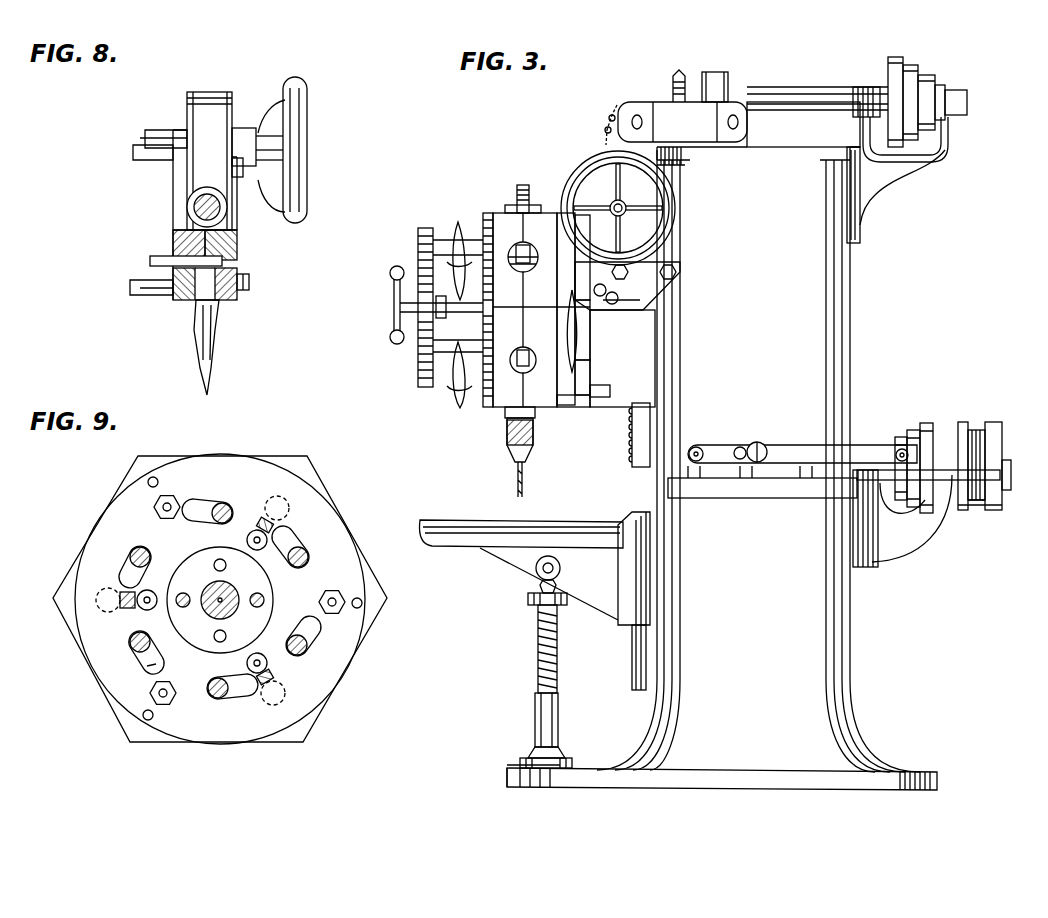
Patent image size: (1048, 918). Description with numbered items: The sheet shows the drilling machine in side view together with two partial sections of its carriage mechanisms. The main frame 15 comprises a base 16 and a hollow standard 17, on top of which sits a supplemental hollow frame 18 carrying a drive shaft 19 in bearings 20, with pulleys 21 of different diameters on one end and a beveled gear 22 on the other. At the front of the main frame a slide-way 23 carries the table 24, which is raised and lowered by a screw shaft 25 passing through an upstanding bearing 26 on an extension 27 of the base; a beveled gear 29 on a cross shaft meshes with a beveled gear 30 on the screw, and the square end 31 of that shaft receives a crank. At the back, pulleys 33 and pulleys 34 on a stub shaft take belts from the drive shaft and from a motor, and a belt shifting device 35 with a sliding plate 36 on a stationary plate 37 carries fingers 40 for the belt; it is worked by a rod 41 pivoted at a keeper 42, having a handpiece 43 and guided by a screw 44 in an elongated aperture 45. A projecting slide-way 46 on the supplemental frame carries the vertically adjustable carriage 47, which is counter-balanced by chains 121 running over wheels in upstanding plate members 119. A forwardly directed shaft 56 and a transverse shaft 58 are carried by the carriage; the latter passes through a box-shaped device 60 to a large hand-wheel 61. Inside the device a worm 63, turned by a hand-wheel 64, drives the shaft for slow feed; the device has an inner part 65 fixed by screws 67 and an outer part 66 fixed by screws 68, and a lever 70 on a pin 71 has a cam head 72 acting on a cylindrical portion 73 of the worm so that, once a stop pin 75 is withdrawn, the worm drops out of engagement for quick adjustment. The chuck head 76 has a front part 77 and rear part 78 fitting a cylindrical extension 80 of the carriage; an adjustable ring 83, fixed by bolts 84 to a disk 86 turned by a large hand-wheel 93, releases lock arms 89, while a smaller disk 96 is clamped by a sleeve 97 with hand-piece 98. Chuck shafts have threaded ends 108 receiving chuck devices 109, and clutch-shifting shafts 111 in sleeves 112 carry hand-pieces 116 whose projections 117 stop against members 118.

In FIG. 3, the main frame 15 is at (858, 568).
In FIG. 3, the base 16 is at (927, 771).
In FIG. 3, the hollow standard 17 is at (758, 686).
In FIG. 3, the supplemental hollow frame 18 is at (758, 413).
In FIG. 3, the drive shaft 19 is at (800, 87).
In FIG. 3, the bearings 20 is at (860, 110).
In FIG. 3, the pulleys 21 is at (922, 72).
In FIG. 3, the beveled gear 22 is at (679, 72).
In FIG. 3, the slide-way 23 is at (632, 652).
In FIG. 3, the table 24 is at (442, 522).
In FIG. 3, the screw shaft 25 is at (538, 655).
In FIG. 3, the upstanding bearing 26 is at (535, 712).
In FIG. 3, the extension 27 is at (507, 777).
In FIG. 3, the beveled gear 29 is at (540, 586).
In FIG. 3, the beveled gear 30 is at (530, 600).
In FIG. 3, the square end 31 is at (535, 567).
In FIG. 3, the pulleys 33 is at (900, 437).
In FIG. 3, the pulleys 34 is at (985, 426).
In FIG. 3, the belt shifting device 35 is at (945, 470).
In FIG. 3, the sliding plate 36 is at (985, 506).
In FIG. 3, the stationary plate 37 is at (948, 522).
In FIG. 3, the projecting fingers 40 is at (1006, 470).
In FIG. 3, the rod 41 is at (792, 471).
In FIG. 3, the keeper pivot 42 is at (897, 451).
In FIG. 3, the handpiece 43 is at (698, 446).
In FIG. 3, the screw 44 is at (761, 444).
In FIG. 3, the elongated aperture 45 is at (741, 447).
In FIG. 3, the projecting slide-way 46 is at (632, 440).
In FIG. 3, the carriage 47 is at (622, 358).
In FIG. 9, the forwardly directed shaft 56 is at (229, 611).
In FIG. 3, the shaft 58 is at (625, 213).
In FIG. 8, the box-shaped device 60 is at (210, 190).
In FIG. 3, the box-shaped device 60 is at (650, 195).
In FIG. 8, the large hand-wheel 61 is at (300, 103).
In FIG. 3, the large hand-wheel 61 is at (595, 160).
In FIG. 8, the worm 63 is at (221, 207).
In FIG. 3, the hand-wheel 64 is at (598, 284).
In FIG. 8, the inner part 65 is at (176, 218).
In FIG. 8, the outer part 66 is at (237, 230).
In FIG. 8, the screws 67 is at (162, 140).
In FIG. 3, the screws 68 is at (668, 276).
In FIG. 8, the lever 70 is at (196, 306).
In FIG. 3, the lever 70 is at (578, 352).
In FIG. 8, the pin 71 is at (150, 261).
In FIG. 8, the cam head 72 is at (173, 237).
In FIG. 8, the cylindrical portion 73 is at (190, 198).
In FIG. 8, the stop pin 75 is at (250, 286).
In FIG. 3, the stop pin 75 is at (604, 301).
In FIG. 9, the chuck head 76 is at (133, 470).
In FIG. 3, the chuck head 76 is at (550, 218).
In FIG. 3, the front part 77 is at (492, 402).
In FIG. 3, the rear part 78 is at (561, 407).
In FIG. 3, the cylindrical extension 80 is at (592, 391).
In FIG. 3, the adjustable ring 83 is at (580, 390).
In FIG. 9, the bolts 84 is at (152, 692).
In FIG. 9, the disk 86 is at (312, 505).
In FIG. 3, the disk 86 is at (492, 213).
In FIG. 3, the lock arms 89 is at (590, 368).
In FIG. 3, the large hand-wheel 93 is at (422, 235).
In FIG. 9, the smaller disk 96 is at (262, 577).
In FIG. 3, the smaller disk 96 is at (458, 308).
In FIG. 9, the sleeve 97 is at (214, 590).
In FIG. 3, the sleeve 97 is at (394, 318).
In FIG. 3, the hand-piece 98 is at (395, 270).
In FIG. 3, the threaded ends 108 is at (523, 185).
In FIG. 3, the chuck devices 109 is at (506, 440).
In FIG. 9, the shafts 111 is at (130, 642).
In FIG. 9, the sleeves 112 is at (152, 638).
In FIG. 3, the hand-pieces 116 is at (456, 226).
In FIG. 9, the backwardly directed projections 117 is at (144, 562).
In FIG. 9, the outwardly projecting members 118 is at (221, 504).
In FIG. 3, the plate members 119 is at (682, 122).
In FIG. 3, the chains 121 is at (617, 105).